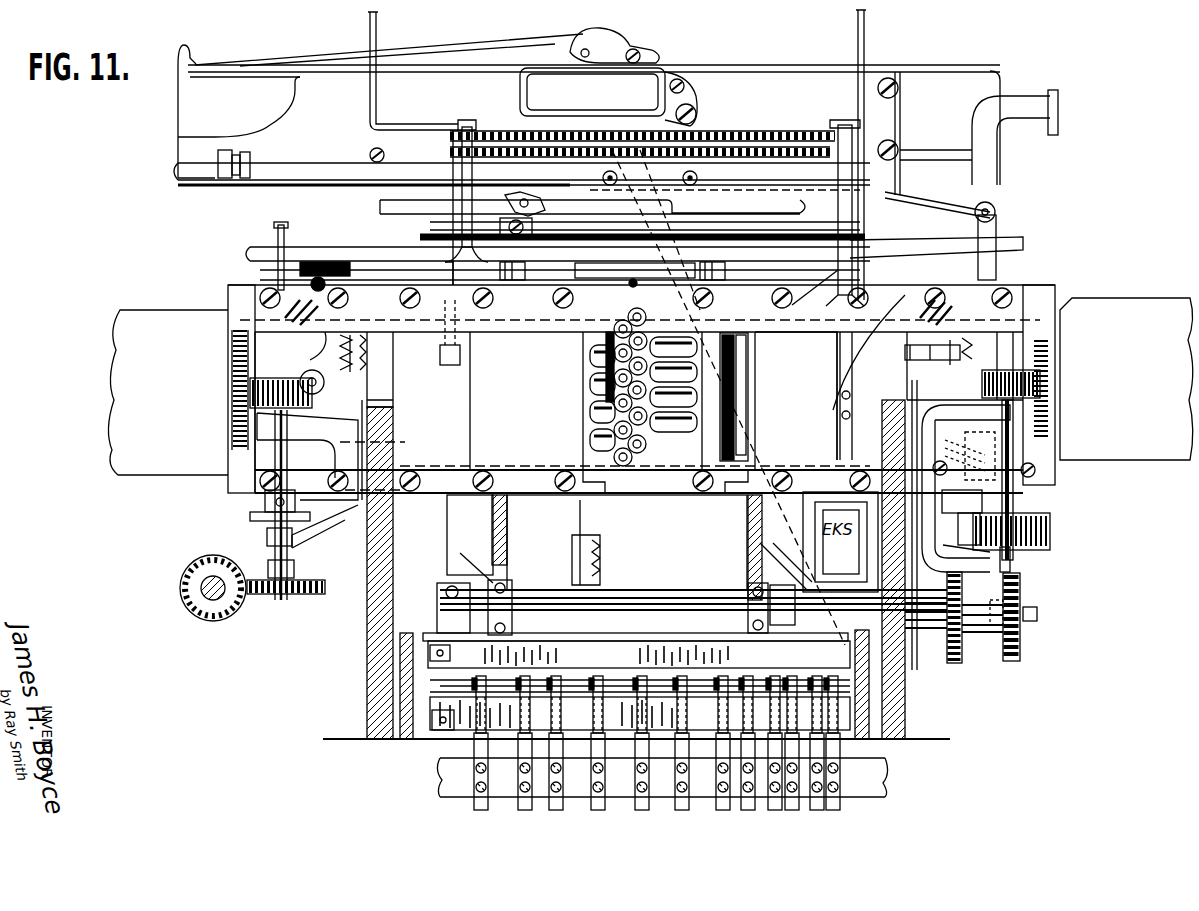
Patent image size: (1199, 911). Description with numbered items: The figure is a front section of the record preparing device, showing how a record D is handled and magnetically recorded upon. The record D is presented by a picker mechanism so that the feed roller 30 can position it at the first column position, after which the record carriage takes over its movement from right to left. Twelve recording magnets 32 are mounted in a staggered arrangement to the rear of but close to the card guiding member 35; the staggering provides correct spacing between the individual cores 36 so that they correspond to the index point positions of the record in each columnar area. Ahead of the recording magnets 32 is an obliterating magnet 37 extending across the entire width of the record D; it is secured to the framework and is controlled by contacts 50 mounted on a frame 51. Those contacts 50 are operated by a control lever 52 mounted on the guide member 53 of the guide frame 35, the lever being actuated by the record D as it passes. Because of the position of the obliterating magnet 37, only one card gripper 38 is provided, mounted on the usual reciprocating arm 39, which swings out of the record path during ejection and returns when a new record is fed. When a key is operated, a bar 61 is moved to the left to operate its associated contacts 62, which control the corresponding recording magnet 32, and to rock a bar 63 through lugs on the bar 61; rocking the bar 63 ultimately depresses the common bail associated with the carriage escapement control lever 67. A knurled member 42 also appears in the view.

The feed roller 30 is at (1040, 381).
The recording magnets 32 is at (595, 354).
The card guiding member 35 is at (803, 442).
The cores 36 is at (597, 401).
The obliterating magnet 37 is at (750, 389).
The card gripper 38 is at (445, 356).
The reciprocating arm 39 is at (462, 268).
The knurled knob 42 is at (282, 380).
The contacts 50 is at (845, 343).
The frame 51 is at (468, 245).
The control lever 52 is at (797, 302).
The guide member 53 is at (910, 300).
The bar 61 is at (593, 682).
The contacts 62 is at (606, 682).
The bar 63 is at (666, 652).
The carriage escapement control lever 67 is at (582, 520).
The record D is at (1107, 307).